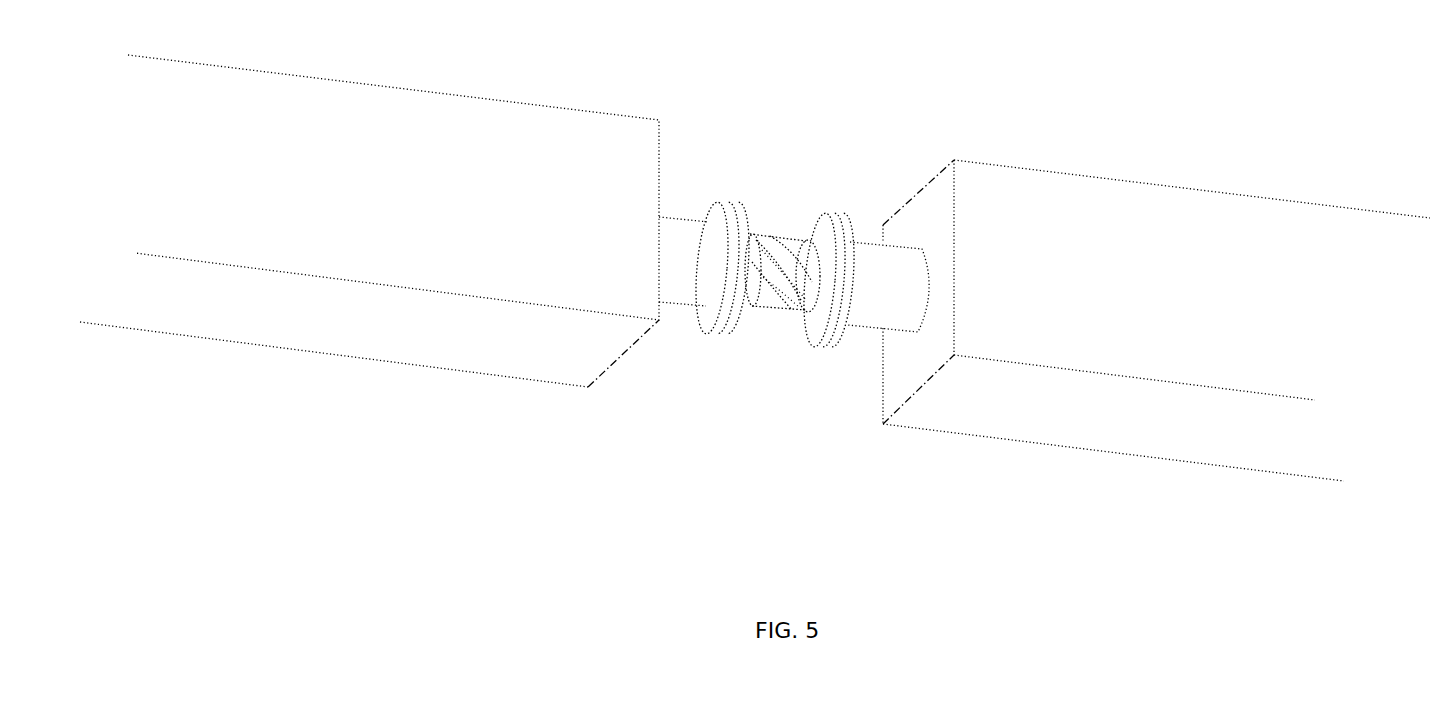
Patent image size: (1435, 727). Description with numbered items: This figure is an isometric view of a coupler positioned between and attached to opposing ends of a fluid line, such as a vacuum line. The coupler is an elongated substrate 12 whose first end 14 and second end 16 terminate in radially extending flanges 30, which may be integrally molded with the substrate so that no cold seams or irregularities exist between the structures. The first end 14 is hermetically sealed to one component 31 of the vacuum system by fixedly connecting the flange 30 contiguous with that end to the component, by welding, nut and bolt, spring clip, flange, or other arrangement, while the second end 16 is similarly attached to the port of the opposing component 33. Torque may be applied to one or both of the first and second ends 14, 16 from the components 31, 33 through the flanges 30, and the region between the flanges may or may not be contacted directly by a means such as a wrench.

The elongated substrate 12 is at (808, 213).
The first end 14 is at (738, 322).
The second end 16 is at (805, 315).
The radially extending flange 30 is at (748, 208).
The component 31 is at (593, 126).
The component 33 is at (978, 172).